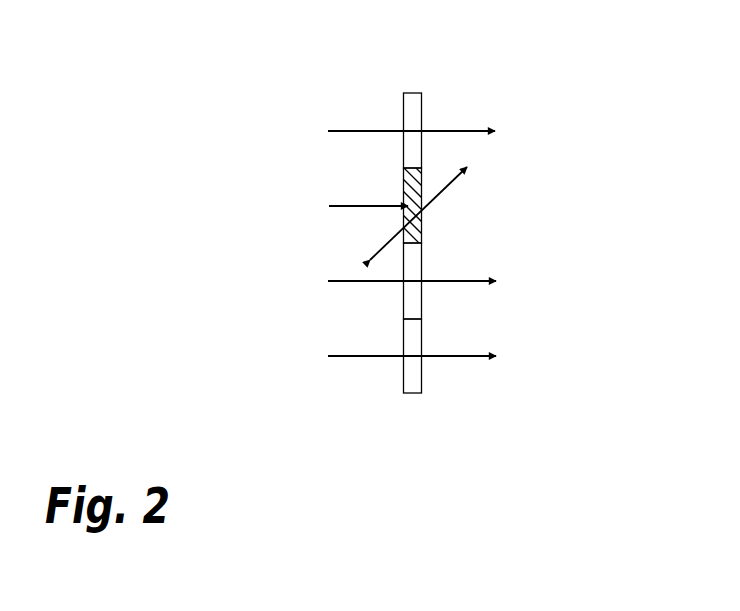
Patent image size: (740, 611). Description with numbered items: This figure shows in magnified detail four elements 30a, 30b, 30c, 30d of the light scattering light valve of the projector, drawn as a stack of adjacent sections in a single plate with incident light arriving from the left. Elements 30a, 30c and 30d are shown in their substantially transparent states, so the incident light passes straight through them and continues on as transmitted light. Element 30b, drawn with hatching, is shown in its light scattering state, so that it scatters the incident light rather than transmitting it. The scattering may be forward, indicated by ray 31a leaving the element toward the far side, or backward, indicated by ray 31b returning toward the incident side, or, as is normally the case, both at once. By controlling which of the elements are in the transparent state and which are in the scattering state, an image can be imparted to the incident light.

The element 30a is at (423, 107).
The element 30b is at (422, 265).
The element 30c is at (422, 307).
The element 30d is at (422, 377).
The ray 31a is at (441, 190).
The ray 31b is at (382, 237).